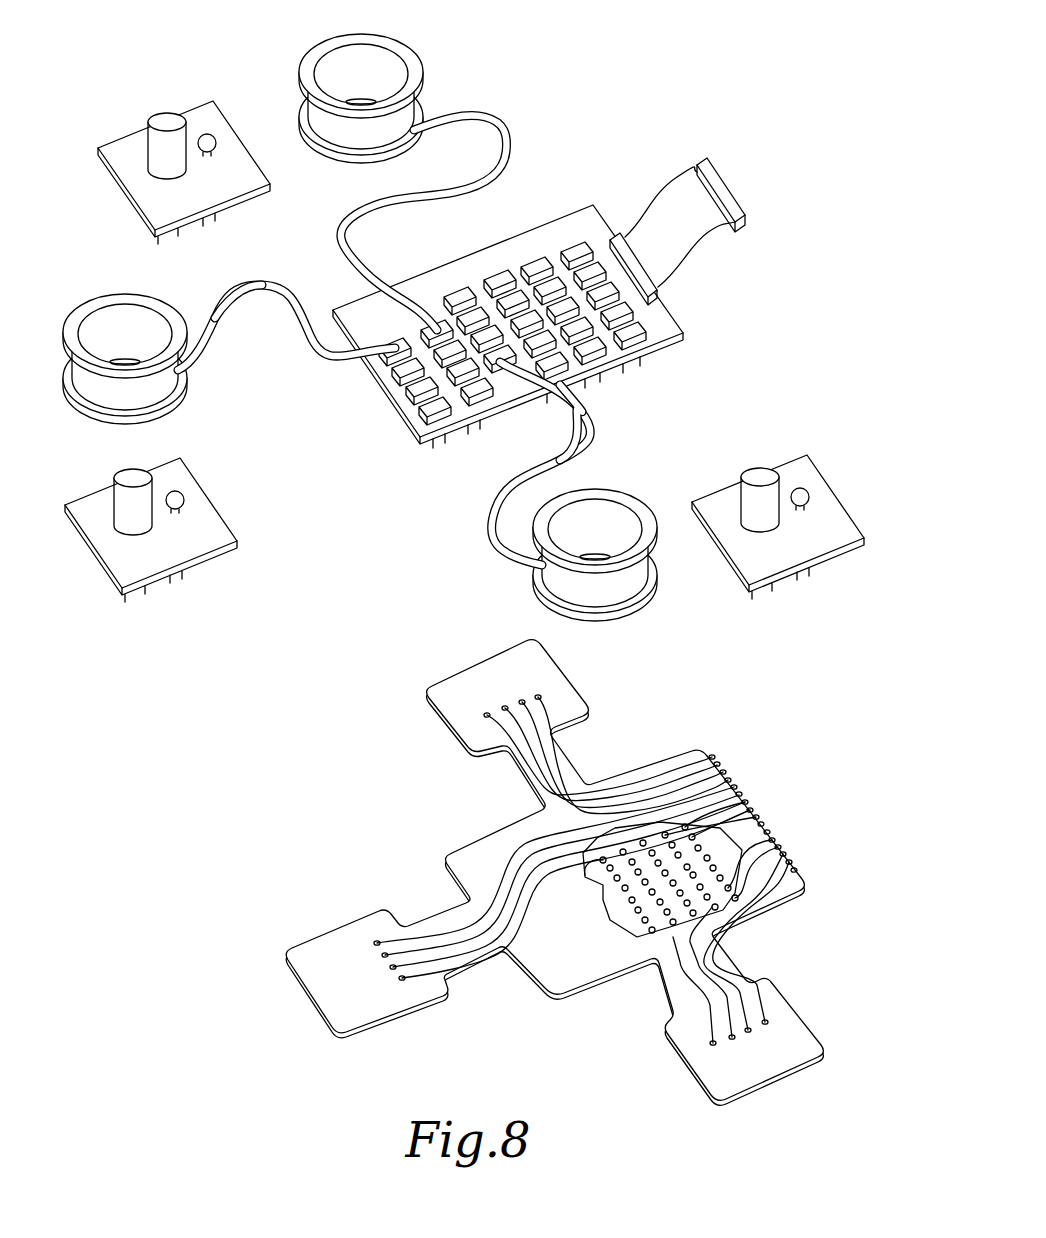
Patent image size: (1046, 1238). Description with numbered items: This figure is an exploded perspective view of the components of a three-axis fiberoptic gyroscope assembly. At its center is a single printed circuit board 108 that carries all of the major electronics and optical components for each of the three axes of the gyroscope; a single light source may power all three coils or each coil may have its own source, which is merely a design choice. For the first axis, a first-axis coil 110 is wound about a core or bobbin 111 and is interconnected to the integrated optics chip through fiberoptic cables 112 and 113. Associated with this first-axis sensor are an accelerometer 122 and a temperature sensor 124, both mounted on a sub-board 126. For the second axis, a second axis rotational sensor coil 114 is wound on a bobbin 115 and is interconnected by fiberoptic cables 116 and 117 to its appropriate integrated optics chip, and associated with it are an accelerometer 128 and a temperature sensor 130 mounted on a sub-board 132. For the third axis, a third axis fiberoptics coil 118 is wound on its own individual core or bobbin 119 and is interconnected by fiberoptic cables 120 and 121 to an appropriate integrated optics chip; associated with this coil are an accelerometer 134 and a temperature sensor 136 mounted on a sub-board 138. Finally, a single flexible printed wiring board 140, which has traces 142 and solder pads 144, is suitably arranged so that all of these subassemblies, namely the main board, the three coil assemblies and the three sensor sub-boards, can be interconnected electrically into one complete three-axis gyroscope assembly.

The printed circuit board 108 is at (497, 240).
The first-axis coil 110 is at (115, 356).
The bobbin 111 is at (137, 293).
The fiberoptic cable 112 is at (222, 322).
The fiberoptic cable 113 is at (237, 283).
The second axis rotational sensor coil 114 is at (373, 106).
The bobbin 115 is at (413, 55).
The fiberoptic cable 116 is at (495, 135).
The fiberoptic cable 117 is at (513, 143).
The third axis fiberoptics coil 118 is at (624, 542).
The bobbin 119 is at (657, 503).
The fiberoptic cable 120 is at (570, 450).
The fiberoptic cable 121 is at (592, 423).
The accelerometer 122 is at (128, 472).
The temperature sensor 124 is at (183, 498).
The sub-board 126 is at (182, 526).
The accelerometer 128 is at (166, 112).
The temperature sensor 130 is at (213, 140).
The sub-board 132 is at (169, 149).
The accelerometer 134 is at (752, 468).
The temperature sensor 136 is at (807, 492).
The sub-board 138 is at (780, 518).
The flexible printed wiring board 140 is at (592, 668).
The traces 142 is at (588, 780).
The solder pads 144 is at (722, 757).